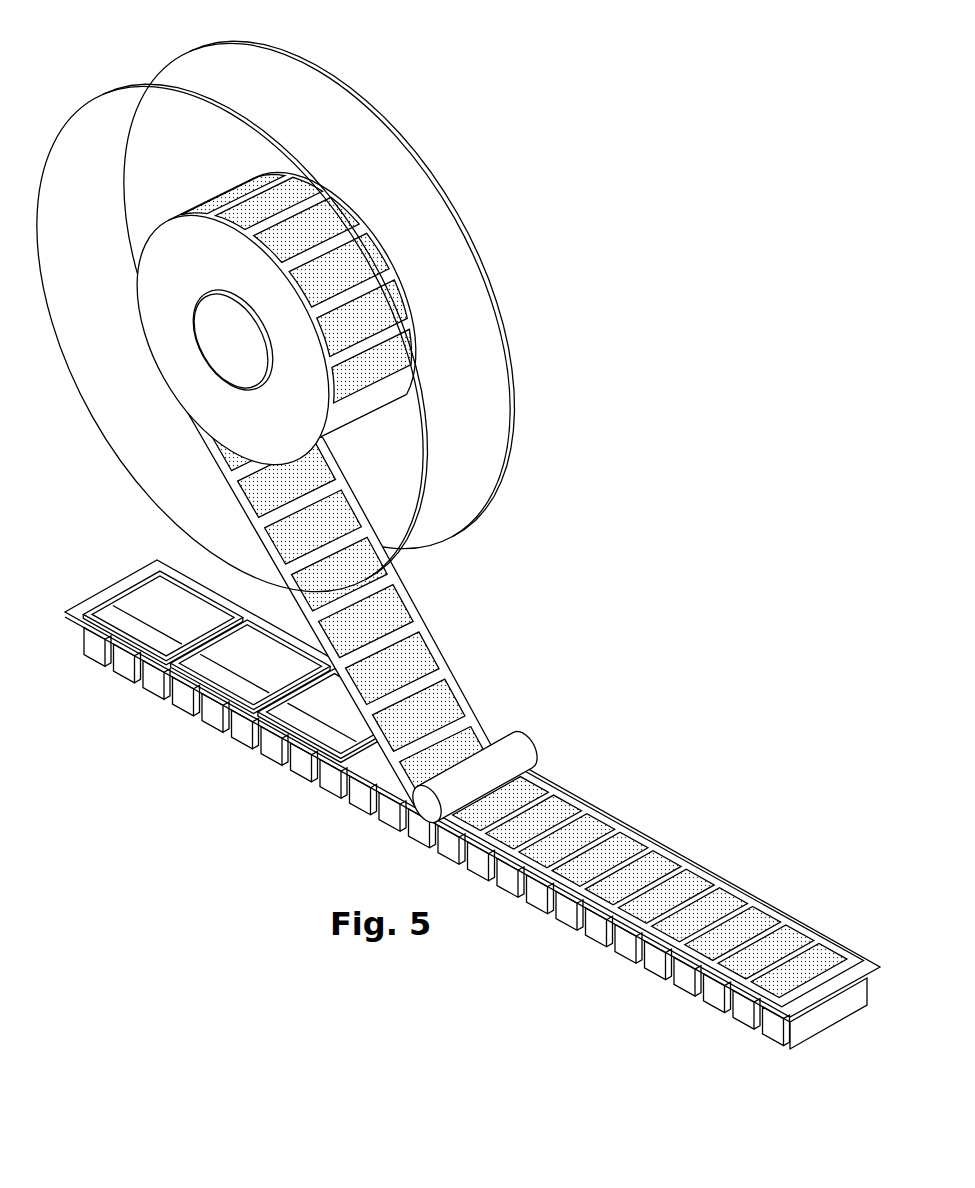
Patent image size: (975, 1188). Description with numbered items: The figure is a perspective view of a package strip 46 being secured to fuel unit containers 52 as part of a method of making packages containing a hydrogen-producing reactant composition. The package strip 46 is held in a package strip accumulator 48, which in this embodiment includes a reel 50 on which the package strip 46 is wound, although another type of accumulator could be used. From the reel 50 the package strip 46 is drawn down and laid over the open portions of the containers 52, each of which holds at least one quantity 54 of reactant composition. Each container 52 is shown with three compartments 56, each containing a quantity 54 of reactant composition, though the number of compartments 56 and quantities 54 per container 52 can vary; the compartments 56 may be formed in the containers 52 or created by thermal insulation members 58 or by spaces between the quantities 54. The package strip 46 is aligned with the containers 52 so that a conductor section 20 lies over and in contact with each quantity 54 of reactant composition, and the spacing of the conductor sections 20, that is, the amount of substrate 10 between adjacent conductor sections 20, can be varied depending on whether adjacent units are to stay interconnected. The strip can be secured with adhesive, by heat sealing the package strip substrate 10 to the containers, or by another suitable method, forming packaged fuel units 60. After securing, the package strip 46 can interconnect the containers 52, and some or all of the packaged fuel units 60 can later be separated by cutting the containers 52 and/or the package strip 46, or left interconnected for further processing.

The package strip substrate 10 is at (445, 658).
The conductor sections 20 is at (437, 640).
The package strip 46 is at (422, 592).
The package strip accumulator 48 is at (368, 86).
The reel 50 is at (476, 253).
The containers 52 is at (114, 680).
The quantity of reactant composition 54 is at (143, 595).
The compartments 56 is at (183, 697).
The thermal insulation members 58 is at (350, 742).
The packaged fuel units 60 is at (573, 907).